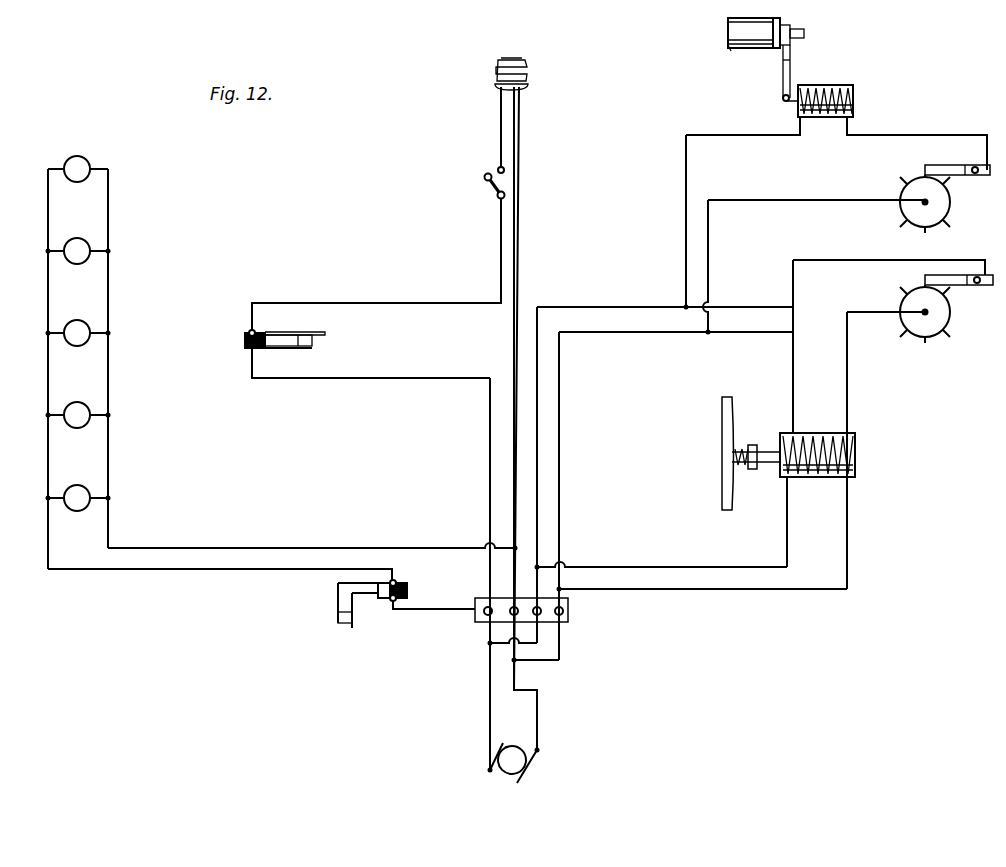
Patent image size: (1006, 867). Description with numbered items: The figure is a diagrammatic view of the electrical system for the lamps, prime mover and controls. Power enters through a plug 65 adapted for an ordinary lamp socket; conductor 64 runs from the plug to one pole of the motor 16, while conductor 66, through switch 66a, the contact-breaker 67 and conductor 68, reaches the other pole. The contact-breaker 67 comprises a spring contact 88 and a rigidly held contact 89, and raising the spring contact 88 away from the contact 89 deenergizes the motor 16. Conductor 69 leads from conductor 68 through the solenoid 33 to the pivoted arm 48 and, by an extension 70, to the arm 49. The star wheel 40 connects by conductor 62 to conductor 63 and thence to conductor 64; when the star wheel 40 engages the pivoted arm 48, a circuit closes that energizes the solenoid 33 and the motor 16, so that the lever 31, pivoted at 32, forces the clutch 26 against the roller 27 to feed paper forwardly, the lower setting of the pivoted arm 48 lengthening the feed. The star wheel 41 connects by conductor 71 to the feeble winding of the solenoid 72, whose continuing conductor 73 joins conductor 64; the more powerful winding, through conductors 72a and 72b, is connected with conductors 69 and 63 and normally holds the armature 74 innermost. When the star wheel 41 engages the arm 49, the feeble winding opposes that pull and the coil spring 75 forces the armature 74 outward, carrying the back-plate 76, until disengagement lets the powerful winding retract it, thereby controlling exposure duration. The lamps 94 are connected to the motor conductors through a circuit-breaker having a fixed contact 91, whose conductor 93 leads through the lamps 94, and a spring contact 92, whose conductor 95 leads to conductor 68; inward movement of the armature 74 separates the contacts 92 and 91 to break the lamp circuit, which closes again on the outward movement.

The motor 16 is at (508, 766).
The clutch 26 is at (804, 20).
The roller 27 is at (714, 59).
The lever 31 is at (791, 57).
The pivot 32 is at (786, 62).
The solenoid 33 is at (822, 117).
The star wheel 40 is at (925, 215).
The star wheel 41 is at (898, 325).
The pivoted arm 48 is at (957, 158).
The arm 49 is at (959, 270).
The conductor 62 is at (800, 200).
The conductor 63 is at (637, 332).
The conductor 64 is at (537, 697).
The plug 65 is at (528, 70).
The conductor 66 is at (501, 232).
The switch 66a is at (490, 186).
The contact-breaker 67 is at (262, 340).
The conductor 68 is at (490, 493).
The conductor 69 is at (638, 307).
The extension 70 is at (755, 307).
The conductor 71 is at (850, 383).
The solenoid 72 is at (855, 463).
The conductor of powerful winding 72a is at (812, 589).
The conductor of powerful winding 72b is at (714, 573).
The conductor 73 is at (793, 383).
The armature 74 is at (761, 447).
The coil spring 75 is at (746, 466).
The back-plate 76 is at (722, 483).
The spring contact 88 is at (299, 323).
The contact 89 is at (291, 348).
The fixed contact 91 is at (338, 600).
The spring contact 92 is at (352, 626).
The conductor 93 is at (238, 569).
The lamps 94 is at (77, 333).
The conductor 95 is at (423, 609).